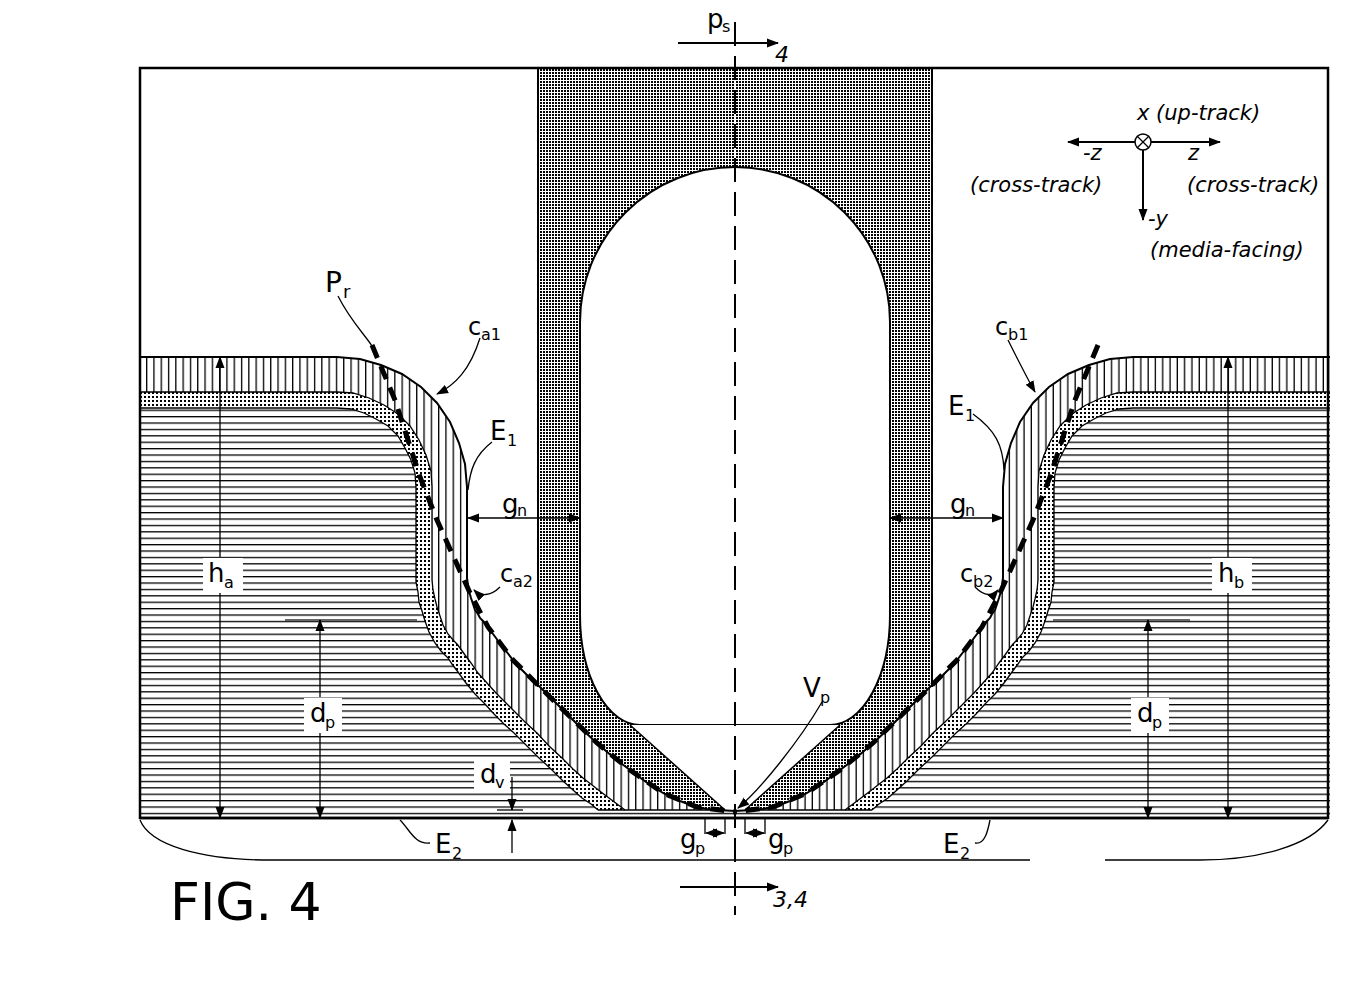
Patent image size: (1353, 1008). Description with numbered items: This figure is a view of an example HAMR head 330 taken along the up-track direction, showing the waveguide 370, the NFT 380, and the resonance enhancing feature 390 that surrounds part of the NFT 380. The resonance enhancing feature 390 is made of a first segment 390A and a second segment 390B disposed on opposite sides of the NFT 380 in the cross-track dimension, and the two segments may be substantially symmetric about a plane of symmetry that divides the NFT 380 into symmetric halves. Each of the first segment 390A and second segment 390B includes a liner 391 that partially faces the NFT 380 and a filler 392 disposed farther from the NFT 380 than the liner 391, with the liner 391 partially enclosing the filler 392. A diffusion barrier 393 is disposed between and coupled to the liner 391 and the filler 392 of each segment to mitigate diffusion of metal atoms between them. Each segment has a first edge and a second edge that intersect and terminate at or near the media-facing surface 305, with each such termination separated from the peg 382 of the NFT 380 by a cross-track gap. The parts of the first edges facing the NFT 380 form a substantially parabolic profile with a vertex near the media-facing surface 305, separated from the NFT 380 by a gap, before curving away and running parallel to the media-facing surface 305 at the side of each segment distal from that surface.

The HAMR head 330 is at (328, 52).
The waveguide 370 is at (735, 439).
The NFT 380 is at (735, 446).
The peg 382 is at (733, 808).
The resonance enhancing feature 390 is at (734, 847).
The first segment 390A is at (278, 440).
The second segment 390B is at (1175, 440).
The liner 391 is at (333, 385).
The filler 392 is at (735, 613).
The diffusion barrier 393 is at (422, 538).
The media-facing surface 305 is at (1198, 824).